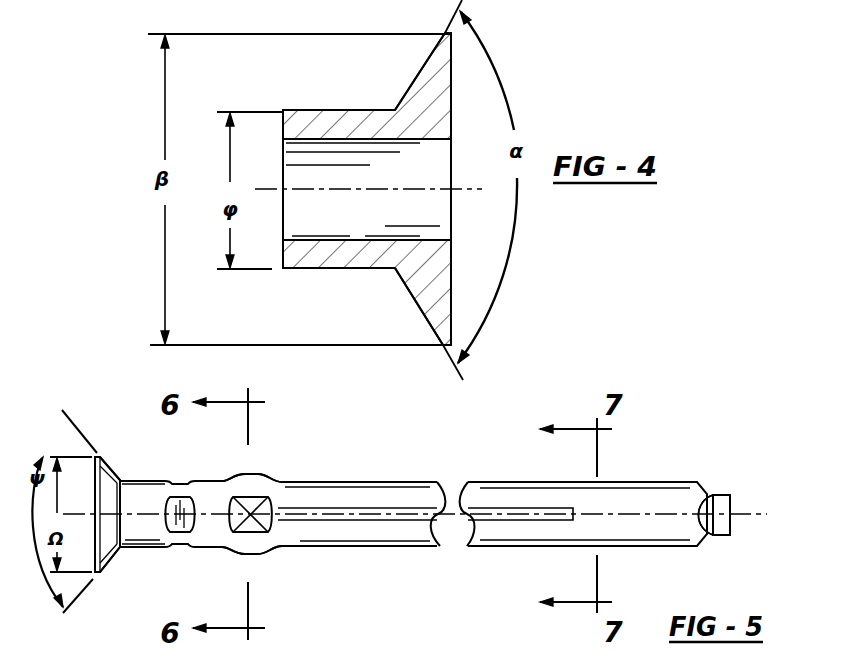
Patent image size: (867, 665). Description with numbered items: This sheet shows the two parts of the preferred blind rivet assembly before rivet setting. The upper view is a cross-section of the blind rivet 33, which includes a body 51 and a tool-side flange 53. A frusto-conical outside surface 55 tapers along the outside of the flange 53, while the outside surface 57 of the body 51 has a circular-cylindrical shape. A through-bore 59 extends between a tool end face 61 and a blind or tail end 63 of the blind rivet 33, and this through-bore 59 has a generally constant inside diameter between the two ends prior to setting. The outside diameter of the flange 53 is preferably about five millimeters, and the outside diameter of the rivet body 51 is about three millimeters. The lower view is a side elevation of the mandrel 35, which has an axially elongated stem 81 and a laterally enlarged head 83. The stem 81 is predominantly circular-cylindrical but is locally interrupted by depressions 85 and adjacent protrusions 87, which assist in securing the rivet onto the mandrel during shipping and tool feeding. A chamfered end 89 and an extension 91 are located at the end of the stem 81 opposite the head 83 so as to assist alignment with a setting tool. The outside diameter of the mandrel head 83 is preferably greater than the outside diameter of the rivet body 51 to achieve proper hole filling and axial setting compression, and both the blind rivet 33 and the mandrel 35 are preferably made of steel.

In FIG. 4, the blind rivet 33 is at (540, 60).
In FIG. 4, the body 51 is at (328, 118).
In FIG. 4, the tool-side flange 53 is at (423, 104).
In FIG. 4, the frusto-conical outside surface 55 is at (418, 305).
In FIG. 4, the outside surface 57 is at (307, 270).
In FIG. 4, the through-bore 59 is at (412, 242).
In FIG. 4, the tool end face 61 is at (452, 294).
In FIG. 4, the blind or tail end 63 is at (283, 116).
In FIG. 5, the mandrel 35 is at (668, 422).
In FIG. 5, the stem 81 is at (350, 497).
In FIG. 5, the head 83 is at (98, 573).
In FIG. 5, the depressions 85 is at (253, 527).
In FIG. 5, the protrusions 87 is at (260, 473).
In FIG. 5, the chamfered end 89 is at (707, 503).
In FIG. 5, the extension 91 is at (732, 502).